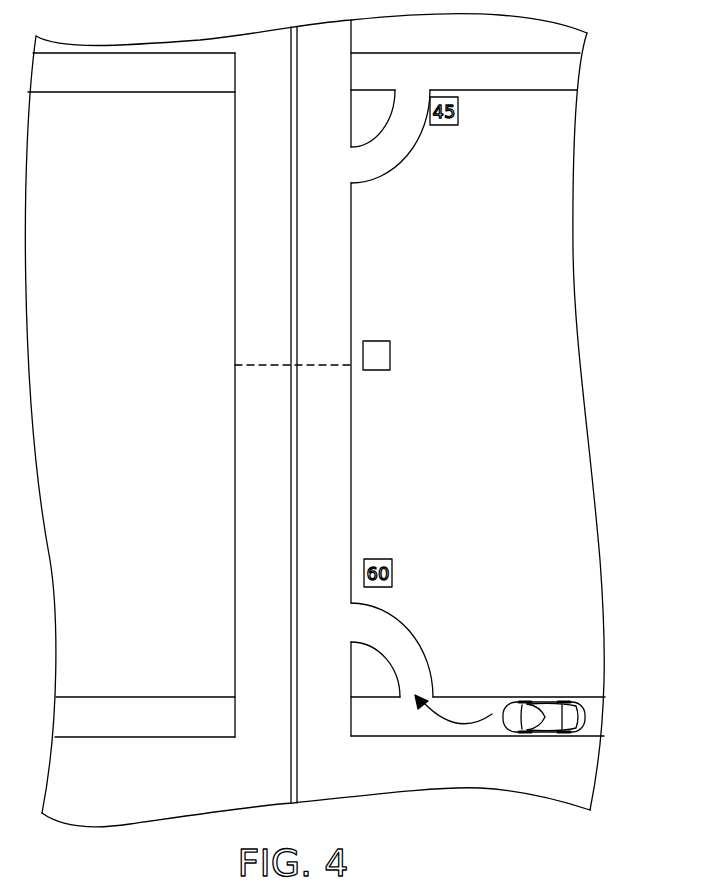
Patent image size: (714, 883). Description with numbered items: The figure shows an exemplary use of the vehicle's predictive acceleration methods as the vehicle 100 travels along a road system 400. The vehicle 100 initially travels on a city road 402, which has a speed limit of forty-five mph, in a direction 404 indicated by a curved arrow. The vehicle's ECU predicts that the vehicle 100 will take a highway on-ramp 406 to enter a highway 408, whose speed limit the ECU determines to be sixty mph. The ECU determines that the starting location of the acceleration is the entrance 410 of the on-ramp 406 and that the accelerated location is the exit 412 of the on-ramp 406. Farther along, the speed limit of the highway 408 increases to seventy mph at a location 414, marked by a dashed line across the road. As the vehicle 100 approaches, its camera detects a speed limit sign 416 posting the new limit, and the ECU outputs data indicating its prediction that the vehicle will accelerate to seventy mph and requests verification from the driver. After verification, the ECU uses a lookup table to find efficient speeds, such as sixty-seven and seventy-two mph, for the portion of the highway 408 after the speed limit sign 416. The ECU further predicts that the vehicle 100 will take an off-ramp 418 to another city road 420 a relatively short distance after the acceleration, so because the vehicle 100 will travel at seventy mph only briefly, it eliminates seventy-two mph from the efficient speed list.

The vehicle 100 is at (548, 733).
The road system 400 is at (143, 276).
The city road 402 is at (383, 727).
The direction 404 is at (453, 727).
The highway on-ramp 406 is at (413, 640).
The highway 408 is at (347, 490).
The entrance 410 is at (418, 687).
The exit 412 is at (372, 630).
The location 414 is at (318, 366).
The speed limit sign 416 is at (390, 355).
The off-ramp 418 is at (393, 167).
The city road 420 is at (502, 92).